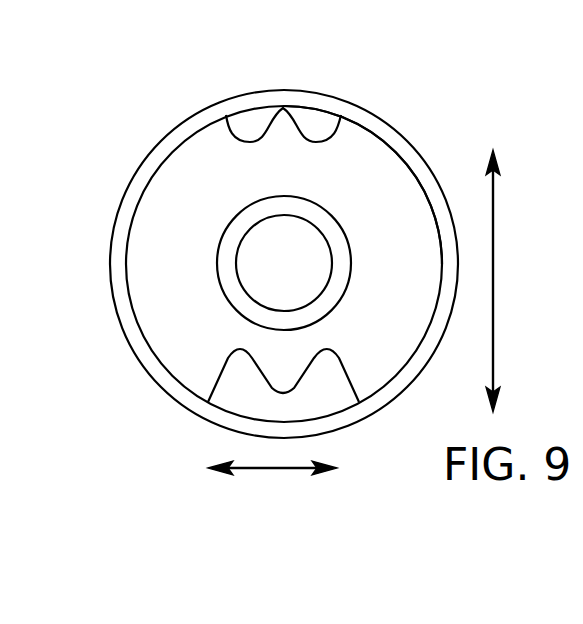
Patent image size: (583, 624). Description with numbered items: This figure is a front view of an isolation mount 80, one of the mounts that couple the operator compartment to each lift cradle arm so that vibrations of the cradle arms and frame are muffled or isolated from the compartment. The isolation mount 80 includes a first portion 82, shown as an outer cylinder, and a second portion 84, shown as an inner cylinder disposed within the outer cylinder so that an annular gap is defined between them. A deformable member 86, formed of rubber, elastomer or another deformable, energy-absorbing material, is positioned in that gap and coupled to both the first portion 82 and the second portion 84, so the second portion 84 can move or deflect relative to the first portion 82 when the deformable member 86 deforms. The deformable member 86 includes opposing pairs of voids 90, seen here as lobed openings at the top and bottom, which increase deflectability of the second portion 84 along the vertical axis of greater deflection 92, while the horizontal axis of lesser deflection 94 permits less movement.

The isolation mount 80 is at (392, 102).
The first portion 82 is at (245, 97).
The second portion 84 is at (230, 277).
The deformable member 86 is at (393, 205).
The voids 90 is at (313, 118).
The axis of greater deflection 92 is at (495, 277).
The axis of lesser deflection 94 is at (252, 467).